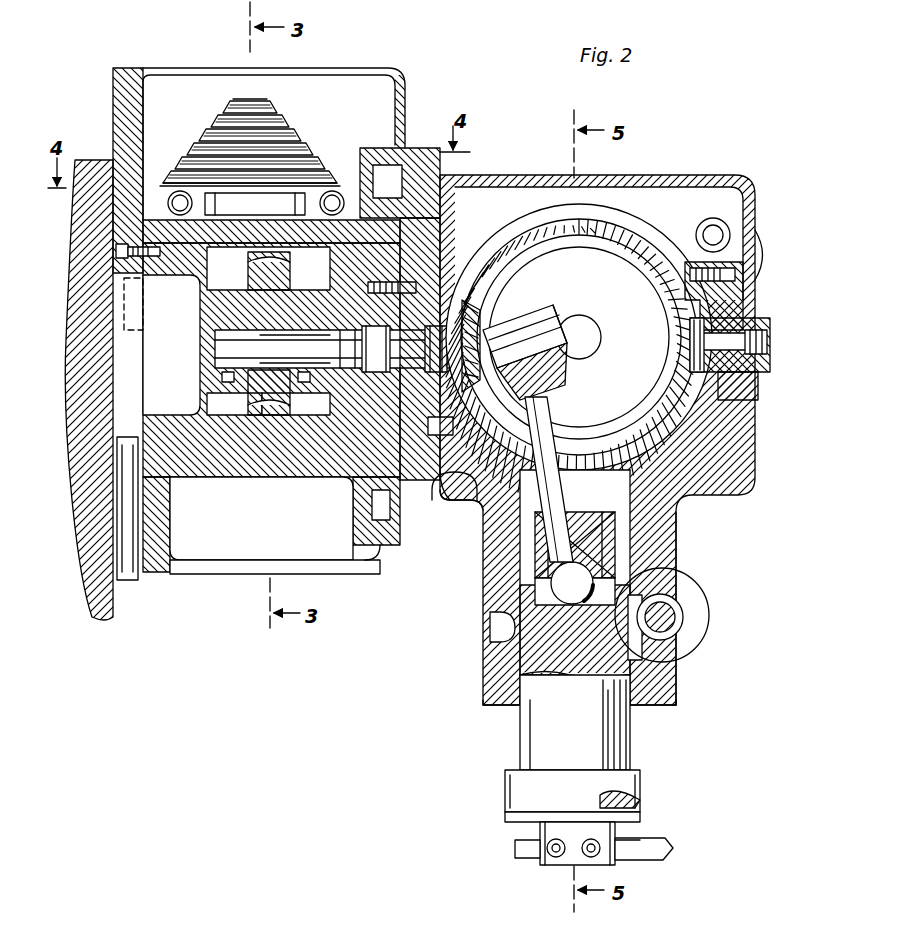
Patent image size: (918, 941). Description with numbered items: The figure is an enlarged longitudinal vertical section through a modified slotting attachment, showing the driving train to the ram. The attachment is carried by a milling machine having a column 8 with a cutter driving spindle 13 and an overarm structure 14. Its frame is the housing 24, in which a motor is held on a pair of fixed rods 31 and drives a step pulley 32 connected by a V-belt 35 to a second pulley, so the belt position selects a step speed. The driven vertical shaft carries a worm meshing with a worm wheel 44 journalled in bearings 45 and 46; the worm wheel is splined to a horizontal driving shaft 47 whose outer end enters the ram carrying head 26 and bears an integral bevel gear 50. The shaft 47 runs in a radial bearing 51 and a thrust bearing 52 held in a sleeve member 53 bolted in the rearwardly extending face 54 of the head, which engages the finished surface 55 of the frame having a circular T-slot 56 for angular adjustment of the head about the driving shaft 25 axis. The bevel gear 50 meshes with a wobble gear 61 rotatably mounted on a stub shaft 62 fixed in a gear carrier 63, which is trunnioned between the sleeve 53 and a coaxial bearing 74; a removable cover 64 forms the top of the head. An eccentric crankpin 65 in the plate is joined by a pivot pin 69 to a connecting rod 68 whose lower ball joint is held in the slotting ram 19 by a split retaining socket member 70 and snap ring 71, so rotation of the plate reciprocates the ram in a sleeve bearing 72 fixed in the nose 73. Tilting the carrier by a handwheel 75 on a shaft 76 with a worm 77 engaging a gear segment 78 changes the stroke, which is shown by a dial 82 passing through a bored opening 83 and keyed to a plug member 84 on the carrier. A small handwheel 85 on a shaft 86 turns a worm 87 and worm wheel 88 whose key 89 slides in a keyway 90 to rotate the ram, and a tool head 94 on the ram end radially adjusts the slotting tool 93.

The column 8 is at (98, 618).
The cutter driving spindle 13 is at (130, 582).
The overarm structure 14 is at (134, 319).
The slotting ram 19 is at (630, 732).
The housing 24 is at (386, 575).
The driving shaft 25 is at (268, 492).
The ram carrying head 26 is at (480, 565).
The fixed rods 31 is at (330, 203).
The step pulley 32 is at (283, 140).
The V-belt 35 is at (308, 152).
The worm wheel 44 is at (280, 278).
The bearing 45 is at (230, 400).
The bearing 46 is at (296, 400).
The horizontal driving shaft 47 is at (222, 340).
The bevel gear 50 is at (480, 320).
The radial bearing 51 is at (376, 349).
The thrust bearing 52 is at (443, 349).
The sleeve member 53 is at (392, 402).
The rearwardly extending face 54 is at (412, 150).
The finished surface 55 is at (378, 543).
The circular T-slot 56 is at (372, 507).
The wobble gear 61 is at (622, 226).
The stub shaft 62 is at (600, 330).
The gear carrier 63 is at (482, 230).
The removable cover 64 is at (652, 175).
The crankpin 65 is at (538, 316).
The connecting rod 68 is at (545, 410).
The pivot pin 69 is at (579, 337).
The split retaining socket member 70 is at (575, 583).
The snap ring 71 is at (588, 550).
The sleeve bearing 72 is at (676, 540).
The nose 73 is at (660, 686).
The bearing 74 is at (760, 395).
The handwheel 75 is at (758, 238).
The shaft 76 is at (716, 238).
The worm 77 is at (697, 225).
The gear segment 78 is at (748, 247).
The dial 82 is at (772, 355).
The bored opening 83 is at (766, 338).
The plug member 84 is at (700, 352).
The handwheel 85 is at (709, 600).
The shaft 86 is at (672, 618).
The worm 87 is at (688, 640).
The worm wheel 88 is at (492, 624).
The key 89 is at (628, 632).
The keyway 90 is at (622, 512).
The slotting tool 93 is at (640, 845).
The tool head 94 is at (642, 782).